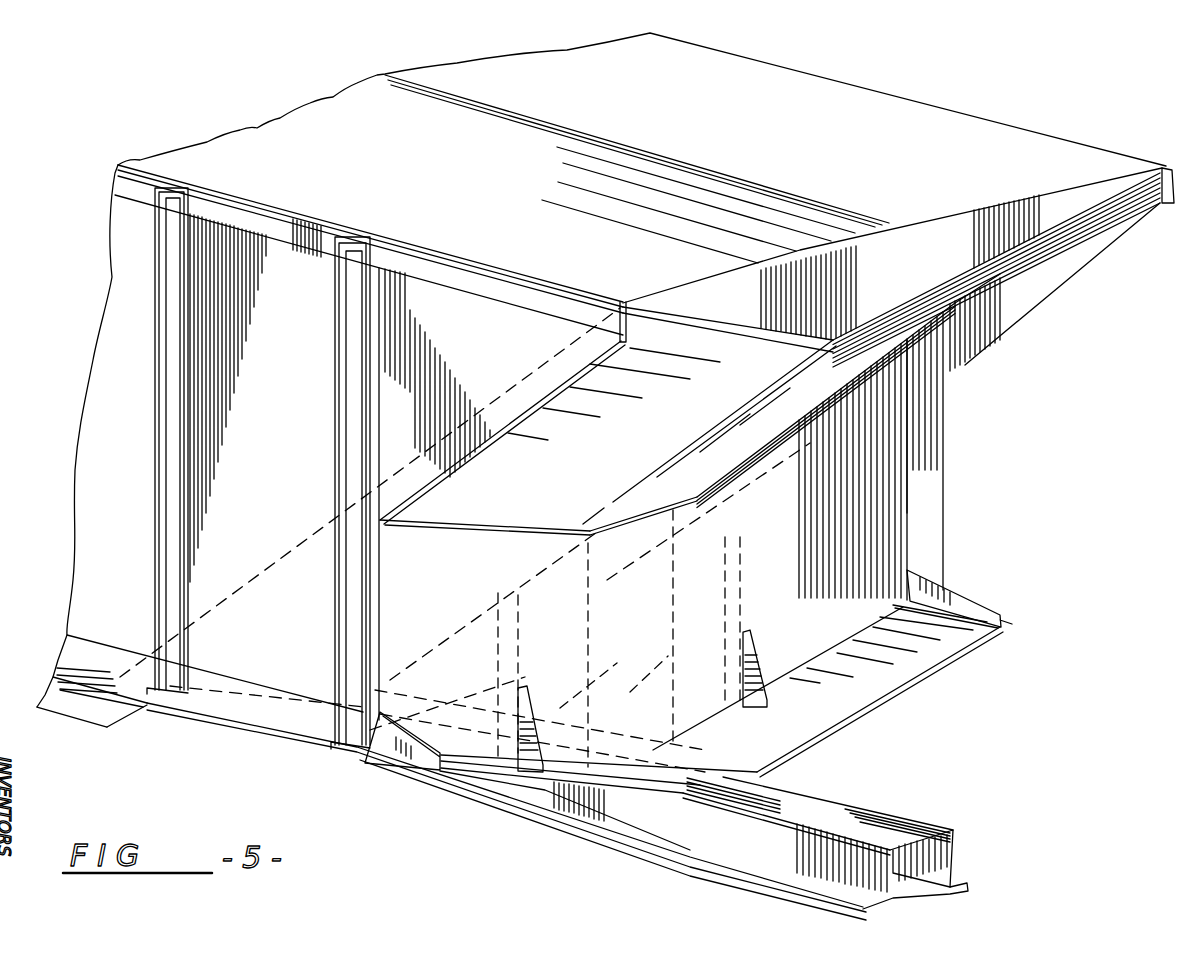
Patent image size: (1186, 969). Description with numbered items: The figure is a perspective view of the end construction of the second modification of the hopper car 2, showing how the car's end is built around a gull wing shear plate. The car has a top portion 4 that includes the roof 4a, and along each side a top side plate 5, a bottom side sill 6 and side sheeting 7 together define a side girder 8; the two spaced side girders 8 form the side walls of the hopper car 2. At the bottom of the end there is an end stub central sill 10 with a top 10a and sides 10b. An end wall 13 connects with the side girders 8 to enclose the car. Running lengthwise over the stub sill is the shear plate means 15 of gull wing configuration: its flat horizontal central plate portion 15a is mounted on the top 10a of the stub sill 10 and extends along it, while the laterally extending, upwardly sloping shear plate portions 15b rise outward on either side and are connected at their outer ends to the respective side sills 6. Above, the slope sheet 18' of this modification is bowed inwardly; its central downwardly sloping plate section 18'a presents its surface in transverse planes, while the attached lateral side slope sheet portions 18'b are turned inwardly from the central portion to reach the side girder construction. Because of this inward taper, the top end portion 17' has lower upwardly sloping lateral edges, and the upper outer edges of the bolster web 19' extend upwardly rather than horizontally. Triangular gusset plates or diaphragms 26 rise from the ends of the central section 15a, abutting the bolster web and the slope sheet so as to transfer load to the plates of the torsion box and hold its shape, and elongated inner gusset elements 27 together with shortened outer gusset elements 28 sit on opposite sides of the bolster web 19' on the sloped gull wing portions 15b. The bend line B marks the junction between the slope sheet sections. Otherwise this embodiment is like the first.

The hopper car 2 is at (135, 284).
The top portion 4 is at (896, 95).
The roof 4a is at (350, 207).
The top side plate 5 is at (518, 297).
The bottom side sill 6 is at (968, 595).
The side sheeting 7 is at (130, 405).
The side girder 8 is at (276, 433).
The end stub central sill 10 is at (908, 818).
The top of stub sill 10a is at (860, 810).
The sides of stub sill 10b is at (957, 862).
The end wall 13 is at (586, 466).
The shear plate means 15 is at (874, 718).
The central plate portion 15a is at (710, 787).
The gull wing shear plate portion 15b is at (925, 670).
The top end portion 17' is at (698, 203).
The slope sheet 18' is at (996, 290).
The central downwardly sloping plate section 18'a is at (900, 252).
The lateral side slope sheet portion 18'b is at (830, 328).
The bolster web 19' is at (903, 456).
The gusset plate or diaphragm 26 is at (612, 667).
The elongated inner gusset element 27 is at (525, 676).
The shortened outer gusset element 28 is at (533, 733).
The bend line B is at (940, 303).